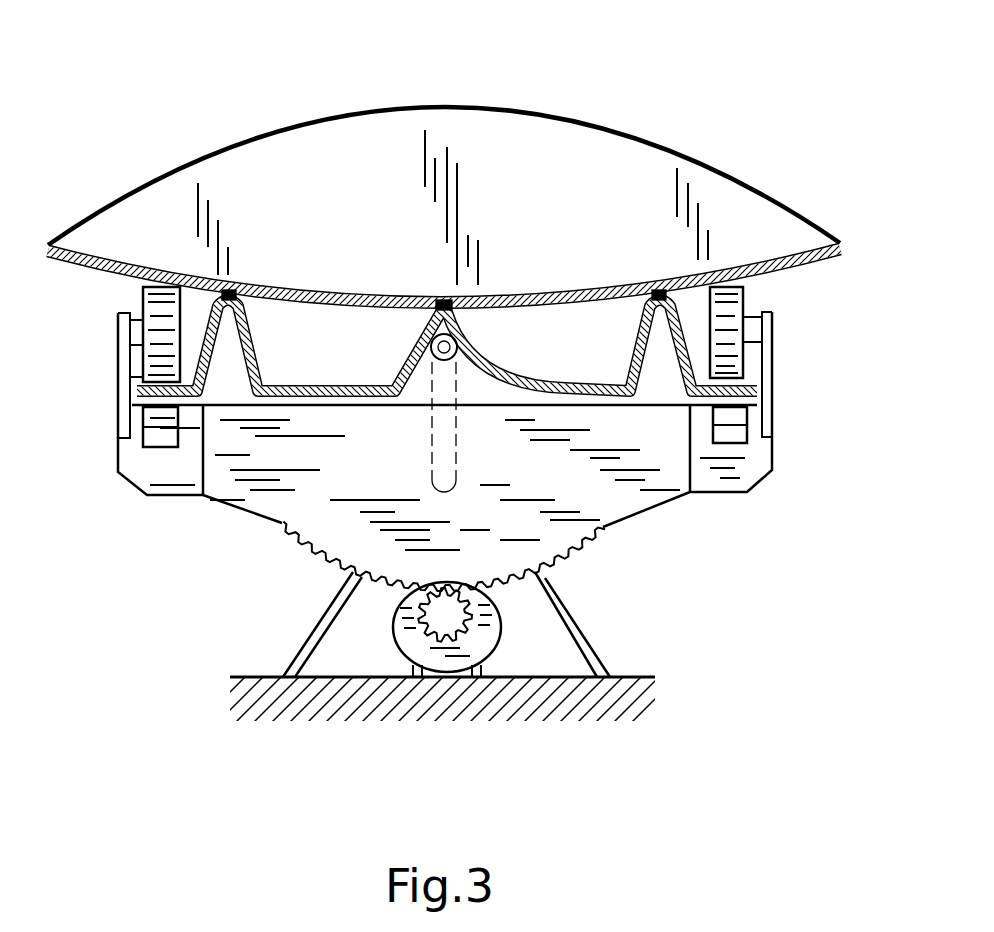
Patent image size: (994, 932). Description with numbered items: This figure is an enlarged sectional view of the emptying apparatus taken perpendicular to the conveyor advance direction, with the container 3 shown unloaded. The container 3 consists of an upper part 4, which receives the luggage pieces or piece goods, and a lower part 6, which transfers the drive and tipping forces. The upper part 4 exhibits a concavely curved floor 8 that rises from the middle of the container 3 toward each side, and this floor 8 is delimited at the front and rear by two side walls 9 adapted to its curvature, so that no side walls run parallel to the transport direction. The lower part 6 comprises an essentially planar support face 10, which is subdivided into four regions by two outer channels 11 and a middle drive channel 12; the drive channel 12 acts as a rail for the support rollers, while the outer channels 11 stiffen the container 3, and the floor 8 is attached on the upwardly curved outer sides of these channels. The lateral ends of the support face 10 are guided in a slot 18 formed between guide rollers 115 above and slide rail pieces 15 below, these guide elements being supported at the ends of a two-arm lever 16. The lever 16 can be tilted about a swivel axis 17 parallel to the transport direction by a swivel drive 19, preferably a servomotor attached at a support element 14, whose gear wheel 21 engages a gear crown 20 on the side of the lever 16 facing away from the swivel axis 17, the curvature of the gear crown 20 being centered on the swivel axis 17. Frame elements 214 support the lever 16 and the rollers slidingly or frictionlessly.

The container 3 is at (302, 188).
The upper part 4 is at (237, 197).
The side walls 9 is at (718, 222).
The floor 8 is at (783, 270).
The lower part 6 is at (310, 386).
The outer channels 11 is at (200, 322).
The swivel axis 17 is at (478, 322).
The drive channel 12 is at (425, 330).
The planar support face 10 is at (137, 398).
The slot 18 is at (762, 378).
The guide rollers 115 is at (736, 318).
The slide rail pieces 15 is at (740, 412).
The two-arm lever 16 is at (617, 498).
The gear crown 20 is at (597, 537).
The swivel drive 19 is at (407, 648).
The support element 14 is at (483, 672).
The gear wheel 21 is at (397, 596).
The frame elements 214 is at (600, 655).